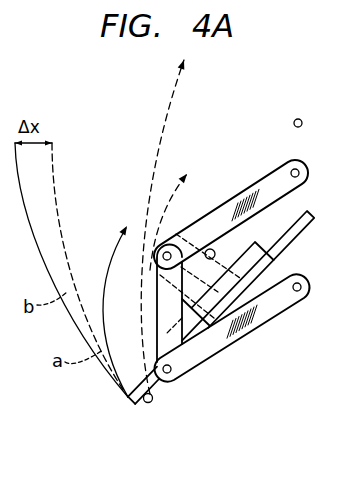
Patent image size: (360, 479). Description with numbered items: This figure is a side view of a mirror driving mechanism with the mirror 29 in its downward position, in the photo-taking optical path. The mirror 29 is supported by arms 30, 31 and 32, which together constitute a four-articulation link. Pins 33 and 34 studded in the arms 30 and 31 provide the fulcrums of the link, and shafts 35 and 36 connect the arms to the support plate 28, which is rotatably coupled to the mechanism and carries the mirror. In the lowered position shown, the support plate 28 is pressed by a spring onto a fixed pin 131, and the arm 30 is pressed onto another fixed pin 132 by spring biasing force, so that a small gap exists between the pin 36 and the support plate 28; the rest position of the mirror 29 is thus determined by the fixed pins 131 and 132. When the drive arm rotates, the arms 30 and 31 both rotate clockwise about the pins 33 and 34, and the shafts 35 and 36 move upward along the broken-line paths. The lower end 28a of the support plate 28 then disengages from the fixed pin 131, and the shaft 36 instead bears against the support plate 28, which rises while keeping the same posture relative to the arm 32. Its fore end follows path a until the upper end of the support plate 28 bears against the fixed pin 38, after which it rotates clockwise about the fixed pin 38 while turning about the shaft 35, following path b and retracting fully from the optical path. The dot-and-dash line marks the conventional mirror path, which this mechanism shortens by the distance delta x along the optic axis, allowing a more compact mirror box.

The support plate 28 is at (289, 233).
The lower end of the support plate 28a is at (137, 406).
The mirror 29 is at (288, 306).
The arm 30 is at (303, 188).
The arm 31 is at (242, 268).
The arm 32 is at (157, 321).
The pin 33 is at (300, 173).
The pin 34 is at (302, 287).
The shaft 35 is at (158, 262).
The shaft 36 is at (184, 381).
The fixed pin 38 is at (302, 123).
The fixed pin 131 is at (153, 399).
The fixed pin 132 is at (210, 249).